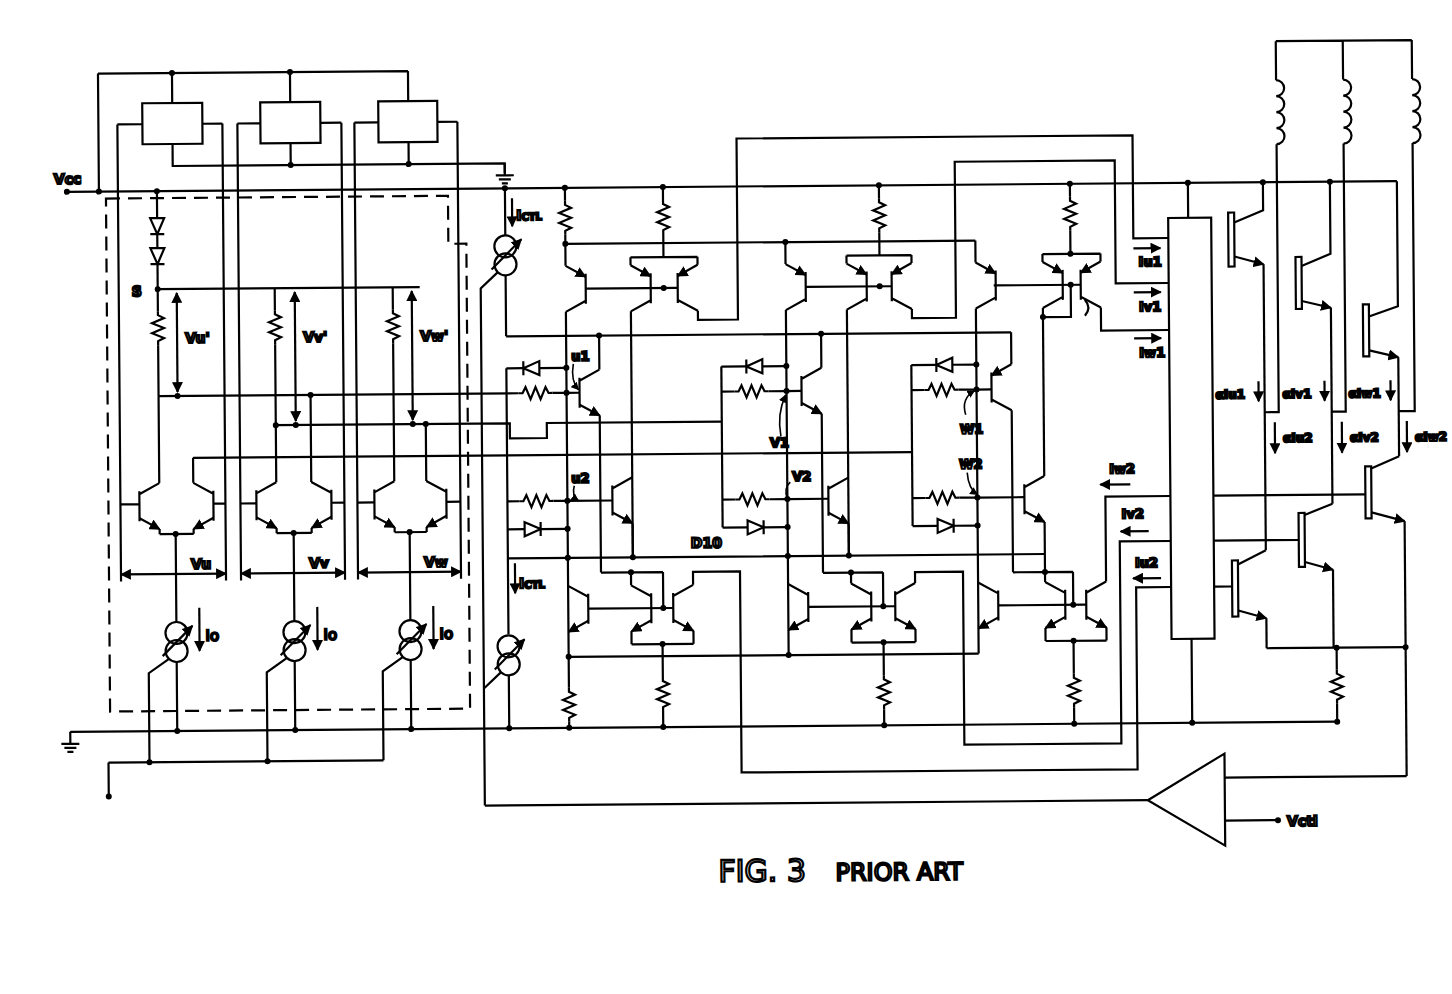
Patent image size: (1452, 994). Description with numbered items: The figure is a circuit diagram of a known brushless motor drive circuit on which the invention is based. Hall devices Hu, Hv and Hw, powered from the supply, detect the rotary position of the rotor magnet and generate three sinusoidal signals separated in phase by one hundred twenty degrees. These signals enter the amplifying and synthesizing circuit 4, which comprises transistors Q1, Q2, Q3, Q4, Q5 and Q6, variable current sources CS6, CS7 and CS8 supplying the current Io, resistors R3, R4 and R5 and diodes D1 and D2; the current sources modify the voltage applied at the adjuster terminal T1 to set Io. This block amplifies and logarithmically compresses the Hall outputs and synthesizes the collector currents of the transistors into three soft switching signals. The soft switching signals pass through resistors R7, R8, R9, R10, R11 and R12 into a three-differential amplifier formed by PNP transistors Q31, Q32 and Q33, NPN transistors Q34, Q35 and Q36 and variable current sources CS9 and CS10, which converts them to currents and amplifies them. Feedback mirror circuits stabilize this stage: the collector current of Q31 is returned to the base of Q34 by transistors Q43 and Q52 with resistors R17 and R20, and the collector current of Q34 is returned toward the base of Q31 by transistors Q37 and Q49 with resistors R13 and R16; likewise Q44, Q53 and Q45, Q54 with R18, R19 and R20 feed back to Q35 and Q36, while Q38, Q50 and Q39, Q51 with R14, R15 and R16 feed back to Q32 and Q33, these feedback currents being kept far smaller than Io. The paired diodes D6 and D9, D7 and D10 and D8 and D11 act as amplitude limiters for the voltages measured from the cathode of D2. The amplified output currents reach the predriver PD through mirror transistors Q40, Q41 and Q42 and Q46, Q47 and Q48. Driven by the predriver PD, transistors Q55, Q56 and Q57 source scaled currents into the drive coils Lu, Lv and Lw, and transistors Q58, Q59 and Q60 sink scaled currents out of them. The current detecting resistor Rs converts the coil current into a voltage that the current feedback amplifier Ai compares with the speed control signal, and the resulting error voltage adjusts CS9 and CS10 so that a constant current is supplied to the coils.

The amplifying and synthesizing circuit 4 is at (108, 612).
The Hall device Hu is at (169, 124).
The Hall device Hv is at (289, 123).
The Hall device Hw is at (405, 122).
The diode D1 is at (174, 219).
The diode D2 is at (174, 268).
The resistor R3 is at (145, 342).
The resistor R4 is at (262, 356).
The resistor R5 is at (380, 355).
The transistor Q1 is at (140, 465).
The transistor Q2 is at (195, 496).
The transistor Q3 is at (258, 479).
The transistor Q4 is at (328, 464).
The transistor Q5 is at (376, 478).
The transistor Q6 is at (426, 478).
The variable current source CS6 is at (183, 648).
The variable current source CS7 is at (301, 647).
The variable current source CS8 is at (417, 646).
The variable current source CS9 is at (494, 496).
The variable current source CS10 is at (518, 669).
The adjuster terminal T1 is at (241, 797).
The diode D6 is at (527, 360).
The diode D7 is at (752, 358).
The diode D8 is at (941, 357).
The diode D9 is at (532, 538).
The diode D10 is at (755, 527).
The diode D11 is at (929, 535).
The resistor R7 is at (542, 406).
The resistor R8 is at (753, 404).
The resistor R9 is at (943, 404).
The resistor R10 is at (537, 491).
The resistor R11 is at (754, 490).
The resistor R12 is at (944, 489).
The resistor R13 is at (681, 222).
The resistor R14 is at (858, 220).
The resistor R15 is at (1048, 219).
The resistor R16 is at (583, 216).
The resistor R17 is at (645, 685).
The resistor R18 is at (860, 683).
The resistor R19 is at (1052, 682).
The resistor R20 is at (549, 692).
The PNP-type transistor Q31 is at (596, 453).
The PNP-type transistor Q32 is at (847, 453).
The PNP-type transistor Q33 is at (1035, 452).
The NPN-type transistor Q34 is at (640, 517).
The NPN-type transistor Q35 is at (861, 516).
The NPN-type transistor Q36 is at (1053, 524).
The transistor Q37 is at (619, 288).
The transistor Q38 is at (841, 404).
The transistor Q39 is at (1032, 369).
The transistor Q40 is at (923, 227).
The transistor Q41 is at (1030, 239).
The transistor Q42 is at (1114, 301).
The transistor Q43 is at (622, 608).
The transistor Q44 is at (842, 607).
The transistor Q45 is at (1034, 607).
The transistor Q46 is at (923, 670).
The transistor Q47 is at (1034, 643).
The transistor Q48 is at (1092, 588).
The transistor Q49 is at (556, 450).
The transistor Q50 is at (776, 448).
The transistor Q51 is at (996, 446).
The transistor Q52 is at (591, 617).
The transistor Q53 is at (776, 607).
The transistor Q54 is at (997, 613).
The transistor Q55 is at (1243, 366).
The transistor Q56 is at (1309, 343).
The transistor Q57 is at (1376, 318).
The transistor Q58 is at (1246, 599).
The transistor Q59 is at (1306, 576).
The transistor Q60 is at (1376, 616).
The predriver PD is at (1191, 453).
The drive coil Lu is at (1263, 112).
The drive coil Lv is at (1330, 112).
The drive coil Lw is at (1392, 111).
The electric current detecting resistor Rs is at (1319, 685).
The electric current feedback amplifier Ai is at (1186, 794).